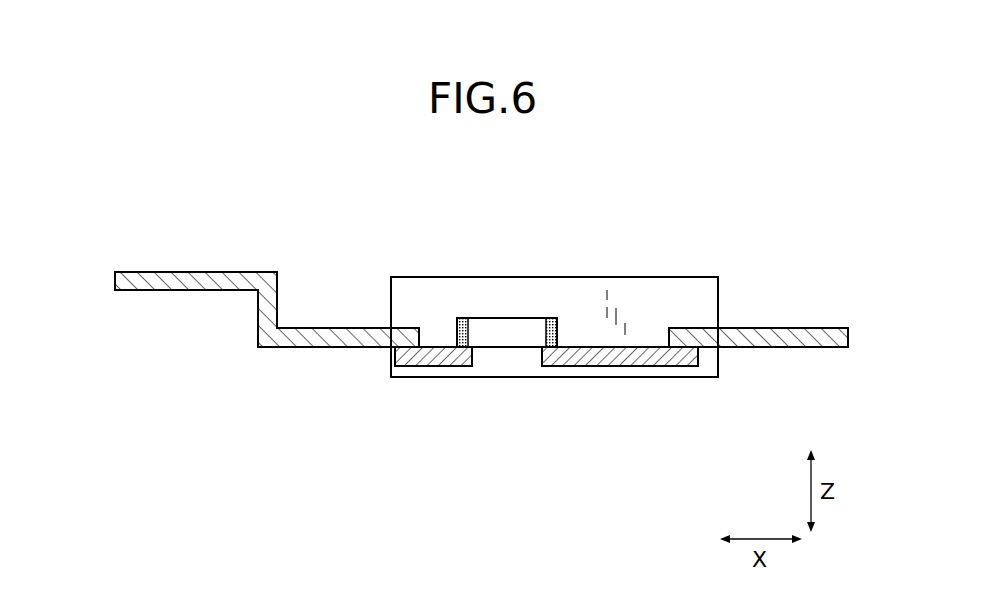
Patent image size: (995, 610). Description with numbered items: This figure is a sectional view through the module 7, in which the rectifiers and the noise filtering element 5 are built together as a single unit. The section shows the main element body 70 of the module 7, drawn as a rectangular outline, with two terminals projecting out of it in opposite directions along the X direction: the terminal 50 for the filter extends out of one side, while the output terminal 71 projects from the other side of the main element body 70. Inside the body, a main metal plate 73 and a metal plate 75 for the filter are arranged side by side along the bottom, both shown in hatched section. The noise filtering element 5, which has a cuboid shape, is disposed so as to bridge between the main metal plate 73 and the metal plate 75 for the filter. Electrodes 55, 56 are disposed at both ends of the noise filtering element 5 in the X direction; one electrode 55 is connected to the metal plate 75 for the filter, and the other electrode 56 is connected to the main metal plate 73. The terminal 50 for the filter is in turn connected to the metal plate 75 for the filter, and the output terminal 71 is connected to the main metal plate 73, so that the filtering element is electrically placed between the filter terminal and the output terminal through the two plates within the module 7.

The noise filtering element 5 is at (490, 327).
The module 7 is at (737, 206).
The terminal for the filter 50 is at (305, 336).
The electrode 55 is at (463, 318).
The electrode 56 is at (550, 318).
The main element body 70 is at (658, 293).
The output terminal 71 is at (780, 342).
The main metal plate 73 is at (615, 360).
The metal plate for the filter 75 is at (435, 355).